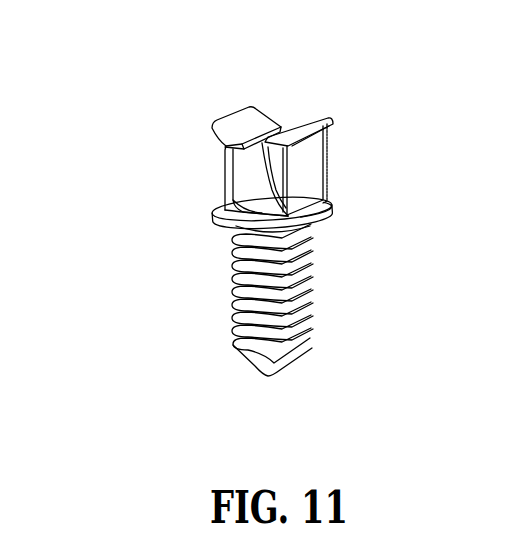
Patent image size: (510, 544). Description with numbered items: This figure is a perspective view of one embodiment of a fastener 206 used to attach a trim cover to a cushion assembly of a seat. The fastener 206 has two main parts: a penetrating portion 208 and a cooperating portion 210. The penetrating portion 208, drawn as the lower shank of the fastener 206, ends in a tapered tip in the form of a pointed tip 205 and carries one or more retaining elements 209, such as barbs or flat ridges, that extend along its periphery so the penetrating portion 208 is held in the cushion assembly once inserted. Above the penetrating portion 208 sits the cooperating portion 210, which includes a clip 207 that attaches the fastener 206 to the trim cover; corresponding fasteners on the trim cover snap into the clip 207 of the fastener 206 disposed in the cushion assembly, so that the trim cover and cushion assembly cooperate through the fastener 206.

The pointed tip 205 is at (267, 377).
The fastener 206 is at (238, 258).
The clip 207 is at (225, 170).
The penetrating portion 208 is at (250, 351).
The retaining elements 209 is at (232, 299).
The cooperating portion 210 is at (335, 162).